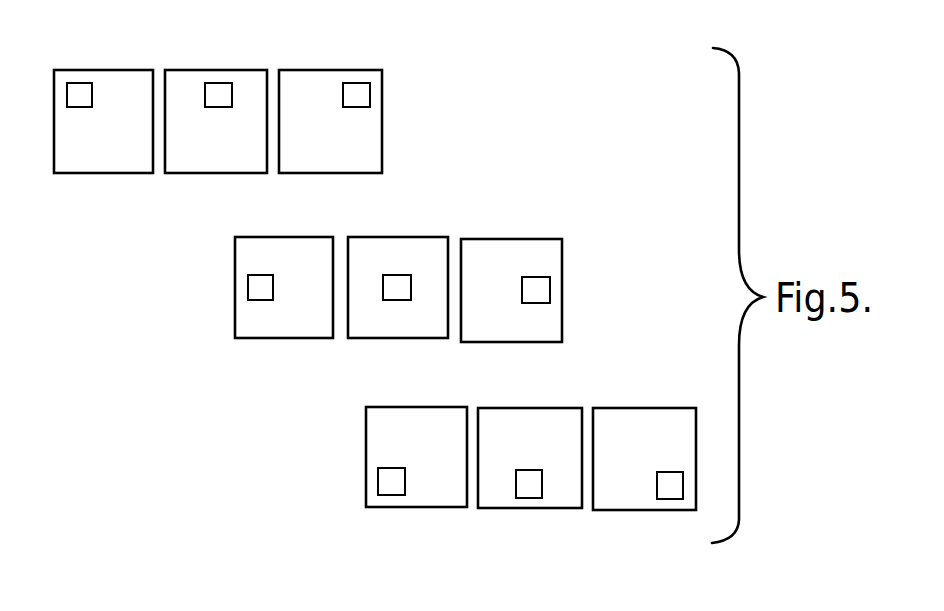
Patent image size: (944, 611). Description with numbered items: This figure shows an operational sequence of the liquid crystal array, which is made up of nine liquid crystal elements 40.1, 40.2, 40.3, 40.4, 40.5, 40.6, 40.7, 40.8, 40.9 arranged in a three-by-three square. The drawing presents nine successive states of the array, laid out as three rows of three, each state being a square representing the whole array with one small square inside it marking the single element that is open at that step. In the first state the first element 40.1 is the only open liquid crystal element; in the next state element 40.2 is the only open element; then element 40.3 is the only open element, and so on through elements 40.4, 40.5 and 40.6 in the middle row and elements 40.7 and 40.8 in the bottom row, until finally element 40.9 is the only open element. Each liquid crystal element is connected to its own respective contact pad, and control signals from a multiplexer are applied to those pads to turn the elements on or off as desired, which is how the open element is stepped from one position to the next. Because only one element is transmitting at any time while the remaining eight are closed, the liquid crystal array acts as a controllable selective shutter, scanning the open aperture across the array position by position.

The first liquid crystal element 40.1 is at (88, 83).
The liquid crystal element 40.2 is at (220, 87).
The liquid crystal element 40.3 is at (357, 87).
The liquid crystal element 40.4 is at (258, 279).
The liquid crystal element 40.5 is at (400, 282).
The liquid crystal element 40.6 is at (535, 280).
The liquid crystal element 40.7 is at (399, 485).
The liquid crystal element 40.8 is at (528, 488).
The liquid crystal element 40.9 is at (672, 490).